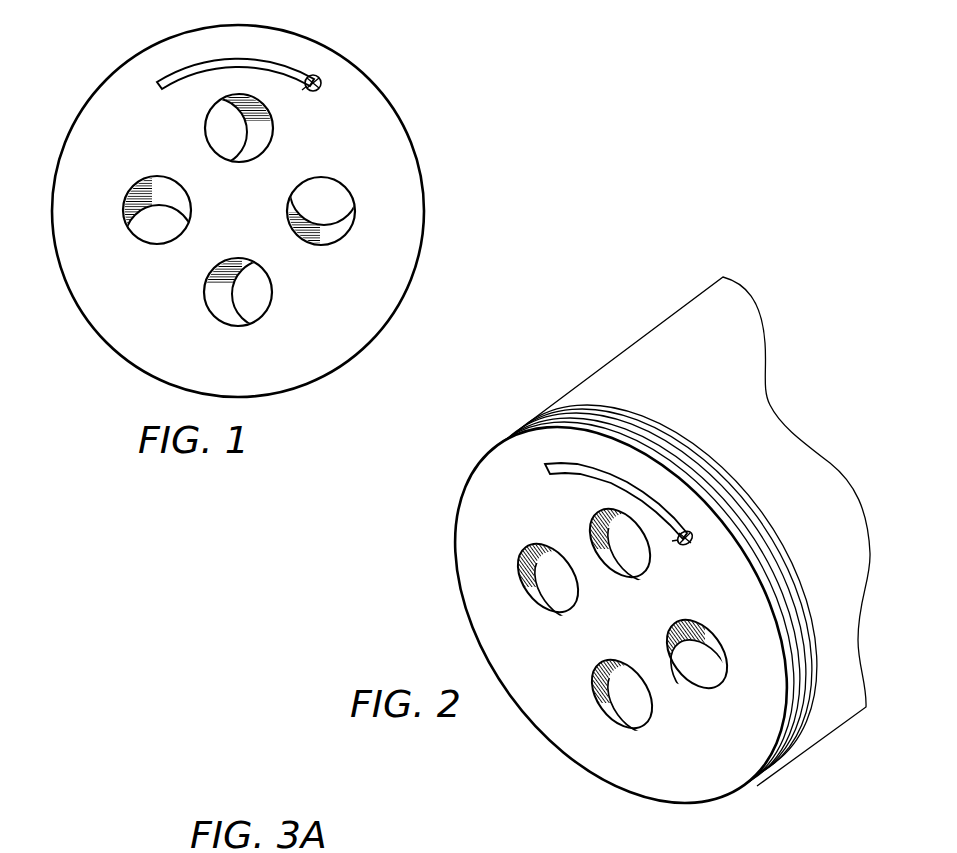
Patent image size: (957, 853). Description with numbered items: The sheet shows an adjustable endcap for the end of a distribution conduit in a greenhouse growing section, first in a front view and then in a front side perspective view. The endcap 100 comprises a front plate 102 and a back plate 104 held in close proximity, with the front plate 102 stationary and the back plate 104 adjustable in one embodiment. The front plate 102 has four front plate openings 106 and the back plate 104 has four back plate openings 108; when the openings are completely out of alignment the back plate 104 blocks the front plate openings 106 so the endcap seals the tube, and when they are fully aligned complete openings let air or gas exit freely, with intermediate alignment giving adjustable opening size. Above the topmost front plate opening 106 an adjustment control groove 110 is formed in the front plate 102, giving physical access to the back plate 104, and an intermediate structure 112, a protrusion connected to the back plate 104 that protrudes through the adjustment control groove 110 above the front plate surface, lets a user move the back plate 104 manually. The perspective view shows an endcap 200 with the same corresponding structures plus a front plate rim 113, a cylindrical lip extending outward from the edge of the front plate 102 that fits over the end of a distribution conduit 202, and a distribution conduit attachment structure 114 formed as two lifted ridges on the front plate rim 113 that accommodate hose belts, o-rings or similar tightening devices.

In FIG. 1, the endcap 100 is at (410, 69).
In FIG. 1, the front plate 102 is at (389, 273).
In FIG. 1, the back plate 104 is at (334, 227).
In FIG. 2, the back plate 104 is at (537, 574).
In FIG. 1, the front plate opening 106 is at (263, 315).
In FIG. 2, the front plate opening 106 is at (613, 720).
In FIG. 1, the back plate opening 108 is at (337, 210).
In FIG. 2, the back plate opening 108 is at (607, 680).
In FIG. 1, the adjustment control groove 110 is at (197, 66).
In FIG. 2, the adjustment control groove 110 is at (563, 468).
In FIG. 1, the intermediate structure 112 is at (319, 74).
In FIG. 2, the intermediate structure 112 is at (697, 538).
In FIG. 2, the endcap 200 is at (437, 517).
In FIG. 2, the distribution conduit 202 is at (697, 311).
In FIG. 2, the front plate rim 113 is at (789, 724).
In FIG. 2, the distribution conduit attachment structure 114 is at (816, 680).